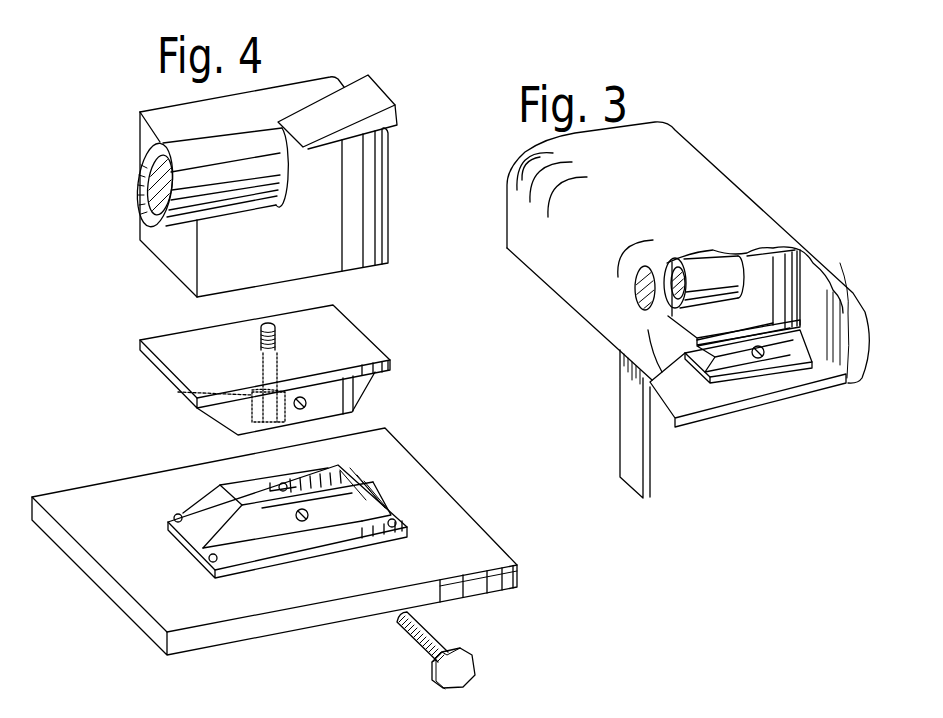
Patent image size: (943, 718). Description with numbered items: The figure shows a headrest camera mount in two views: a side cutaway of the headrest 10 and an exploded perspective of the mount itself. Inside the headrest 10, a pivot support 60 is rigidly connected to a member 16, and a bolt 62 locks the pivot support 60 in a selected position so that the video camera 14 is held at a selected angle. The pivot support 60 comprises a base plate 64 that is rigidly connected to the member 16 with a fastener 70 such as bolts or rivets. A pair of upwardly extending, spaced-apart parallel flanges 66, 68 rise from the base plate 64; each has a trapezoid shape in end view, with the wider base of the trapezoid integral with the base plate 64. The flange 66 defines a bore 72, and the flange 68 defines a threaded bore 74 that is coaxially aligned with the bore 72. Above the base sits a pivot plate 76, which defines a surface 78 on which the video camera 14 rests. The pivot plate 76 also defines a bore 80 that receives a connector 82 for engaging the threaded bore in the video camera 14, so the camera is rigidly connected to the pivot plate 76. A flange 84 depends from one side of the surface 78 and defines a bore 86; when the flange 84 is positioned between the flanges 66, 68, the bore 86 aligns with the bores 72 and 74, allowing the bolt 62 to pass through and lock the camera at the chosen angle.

In FIG. 3, the headrest 10 is at (748, 130).
In FIG. 3, the video camera 14 is at (760, 270).
In FIG. 4, the video camera 14 is at (373, 162).
In FIG. 3, the member 16 is at (728, 408).
In FIG. 4, the member 16 is at (274, 541).
In FIG. 3, the pivot support 60 is at (755, 384).
In FIG. 4, the pivot support 60 is at (285, 439).
In FIG. 3, the bolt 62 is at (764, 356).
In FIG. 4, the bolt 62 is at (470, 667).
In FIG. 4, the base plate 64 is at (316, 510).
In FIG. 4, the flange 66 is at (308, 511).
In FIG. 4, the flange 68 is at (337, 467).
In FIG. 4, the fastener 70 is at (178, 514).
In FIG. 4, the bore 72 is at (305, 521).
In FIG. 4, the threaded bore 74 is at (278, 488).
In FIG. 4, the pivot plate 76 is at (300, 362).
In FIG. 4, the surface 78 is at (343, 348).
In FIG. 4, the bore 80 is at (265, 352).
In FIG. 4, the connector 82 is at (217, 395).
In FIG. 4, the flange 84 is at (360, 385).
In FIG. 4, the bore 86 is at (306, 403).